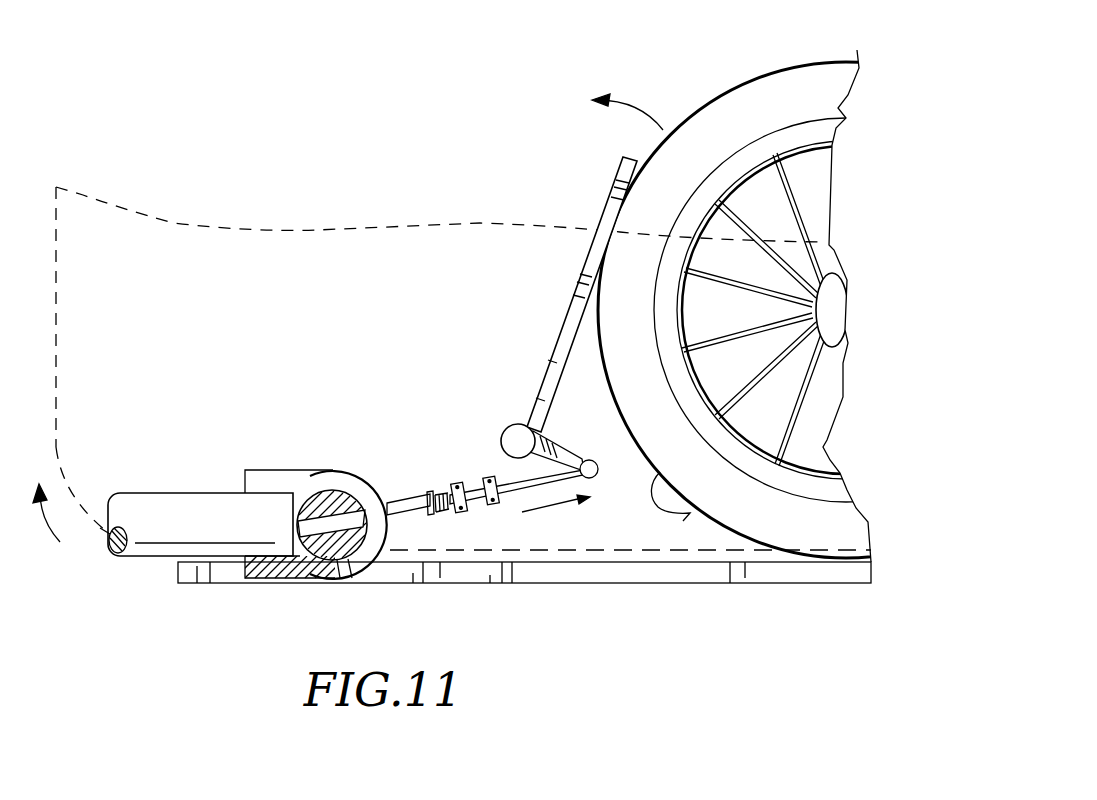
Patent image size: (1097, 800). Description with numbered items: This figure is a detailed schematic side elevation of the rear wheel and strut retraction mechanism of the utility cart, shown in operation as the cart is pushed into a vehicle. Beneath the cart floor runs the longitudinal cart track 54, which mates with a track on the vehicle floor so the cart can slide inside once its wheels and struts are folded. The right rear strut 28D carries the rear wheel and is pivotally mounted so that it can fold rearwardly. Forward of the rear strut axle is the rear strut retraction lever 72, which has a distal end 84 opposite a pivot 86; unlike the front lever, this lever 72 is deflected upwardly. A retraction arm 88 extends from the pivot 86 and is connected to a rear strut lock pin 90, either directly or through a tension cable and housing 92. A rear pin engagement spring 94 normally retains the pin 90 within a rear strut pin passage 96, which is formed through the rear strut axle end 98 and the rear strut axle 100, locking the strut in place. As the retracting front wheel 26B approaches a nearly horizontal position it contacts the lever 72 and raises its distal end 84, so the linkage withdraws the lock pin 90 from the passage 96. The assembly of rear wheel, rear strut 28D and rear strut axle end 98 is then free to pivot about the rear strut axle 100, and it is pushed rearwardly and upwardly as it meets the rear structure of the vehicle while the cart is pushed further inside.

The right front wheel 26B is at (690, 513).
The right rear strut 28D is at (228, 530).
The cart track 54 is at (470, 583).
The rear strut retraction lever 72 is at (557, 338).
The distal end 84 is at (620, 178).
The pivot 86 is at (514, 425).
The retraction arm 88 is at (557, 430).
The rear strut lock pin 90 is at (410, 498).
The tension cable and housing 92 is at (489, 477).
The rear pin engagement spring 94 is at (437, 511).
The rear strut pin passage 96 is at (322, 493).
The rear strut axle end 98 is at (247, 472).
The rear strut axle 100 is at (342, 476).